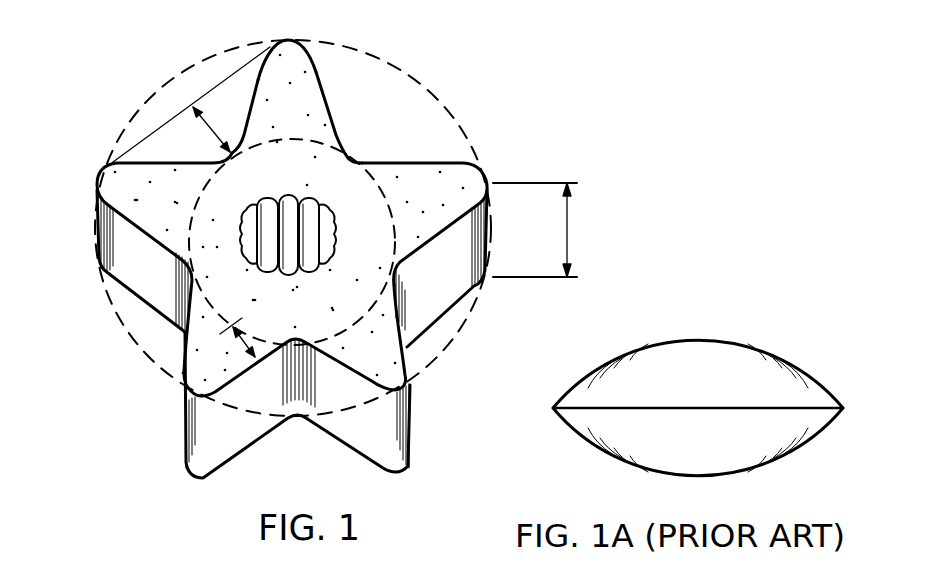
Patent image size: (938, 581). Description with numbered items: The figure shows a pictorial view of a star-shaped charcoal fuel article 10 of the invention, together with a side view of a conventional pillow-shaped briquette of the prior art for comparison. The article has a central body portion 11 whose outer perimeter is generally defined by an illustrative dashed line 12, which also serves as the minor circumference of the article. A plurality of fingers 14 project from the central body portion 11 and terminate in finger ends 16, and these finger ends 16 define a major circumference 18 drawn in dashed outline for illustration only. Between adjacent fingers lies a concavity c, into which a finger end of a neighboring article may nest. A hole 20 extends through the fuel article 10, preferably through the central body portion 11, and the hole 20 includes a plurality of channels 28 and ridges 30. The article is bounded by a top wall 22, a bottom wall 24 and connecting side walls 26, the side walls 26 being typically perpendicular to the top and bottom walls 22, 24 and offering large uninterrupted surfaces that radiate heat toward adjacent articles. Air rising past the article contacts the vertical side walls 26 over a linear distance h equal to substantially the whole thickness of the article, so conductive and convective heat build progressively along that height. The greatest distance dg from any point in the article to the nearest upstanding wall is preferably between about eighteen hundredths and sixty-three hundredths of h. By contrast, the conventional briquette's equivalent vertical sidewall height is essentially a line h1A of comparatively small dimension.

In FIG. 1, the charcoal fuel article 10 is at (383, 40).
In FIG. 1, the central body portion 11 is at (347, 227).
In FIG. 1, the dashed line 12 is at (337, 133).
In FIG. 1, the fingers 14 is at (303, 85).
In FIG. 1, the finger ends 16 is at (285, 38).
In FIG. 1, the major circumference 18 is at (423, 80).
In FIG. 1, the hole 20 is at (295, 210).
In FIG. 1, the top wall 22 is at (415, 180).
In FIG. 1, the bottom wall 24 is at (443, 310).
In FIG. 1, the side walls 26 is at (470, 273).
In FIG. 1, the channels 28 is at (308, 217).
In FIG. 1, the ridges 30 is at (269, 222).
In FIG. 1, the concavity c is at (209, 128).
In FIG. 1, the greatest distance dg is at (266, 346).
In FIG. 1, the height h is at (567, 232).
In FIG. 1A, the height of equivalent vertical sidewalls h1A is at (608, 409).